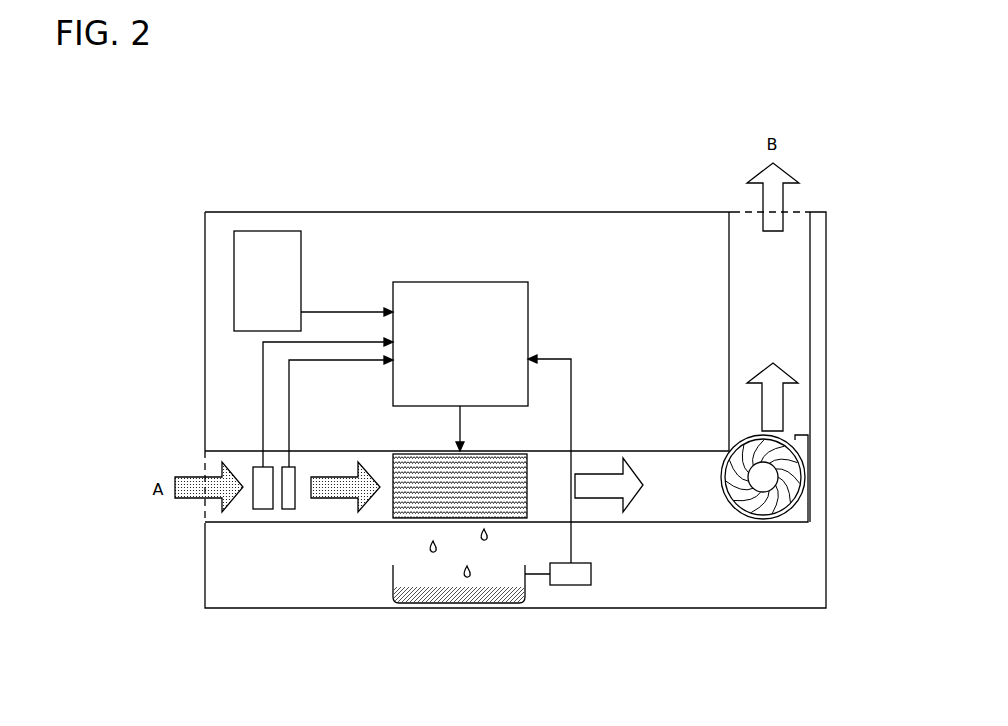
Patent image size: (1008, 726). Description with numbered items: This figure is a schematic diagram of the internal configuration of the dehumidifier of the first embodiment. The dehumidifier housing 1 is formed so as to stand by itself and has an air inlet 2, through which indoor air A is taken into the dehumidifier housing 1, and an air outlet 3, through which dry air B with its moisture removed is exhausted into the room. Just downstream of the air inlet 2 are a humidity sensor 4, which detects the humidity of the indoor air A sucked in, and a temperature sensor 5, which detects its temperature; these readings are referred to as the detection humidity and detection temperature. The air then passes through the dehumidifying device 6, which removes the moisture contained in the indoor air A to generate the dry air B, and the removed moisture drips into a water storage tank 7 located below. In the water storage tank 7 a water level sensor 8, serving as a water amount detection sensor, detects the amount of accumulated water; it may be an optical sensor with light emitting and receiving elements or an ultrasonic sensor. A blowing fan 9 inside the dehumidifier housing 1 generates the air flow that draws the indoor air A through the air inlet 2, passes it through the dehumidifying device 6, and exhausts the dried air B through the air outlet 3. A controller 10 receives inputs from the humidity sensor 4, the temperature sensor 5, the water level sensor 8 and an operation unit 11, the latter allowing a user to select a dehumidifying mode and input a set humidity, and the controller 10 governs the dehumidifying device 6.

The dehumidifier housing 1 is at (205, 264).
The air inlet 2 is at (200, 512).
The air outlet 3 is at (798, 212).
The humidity sensor 4 is at (263, 509).
The temperature sensor 5 is at (288, 509).
The dehumidifying device 6 is at (400, 522).
The water storage tank 7 is at (490, 603).
The water level sensor 8 is at (575, 585).
The blowing fan 9 is at (730, 460).
The controller 10 is at (528, 308).
The operation unit 11 is at (268, 230).